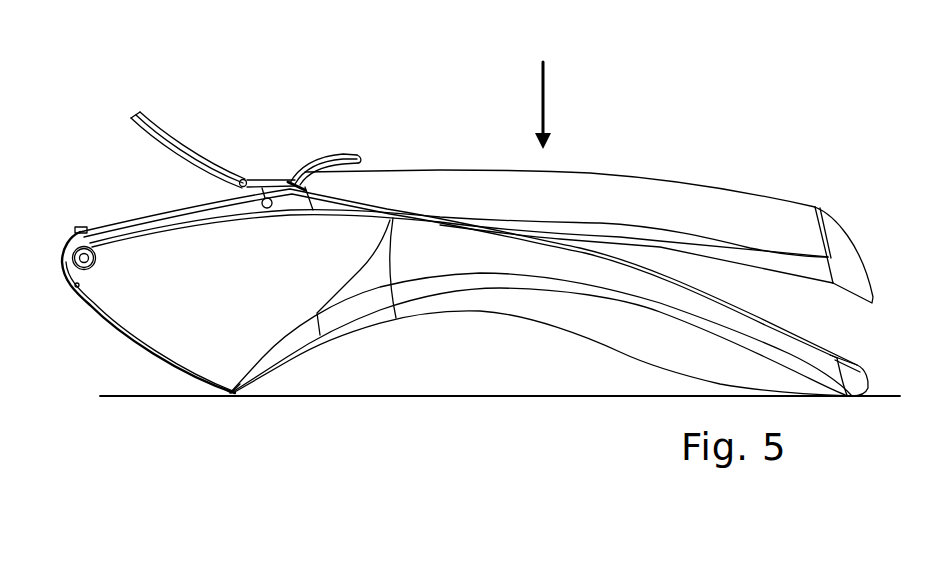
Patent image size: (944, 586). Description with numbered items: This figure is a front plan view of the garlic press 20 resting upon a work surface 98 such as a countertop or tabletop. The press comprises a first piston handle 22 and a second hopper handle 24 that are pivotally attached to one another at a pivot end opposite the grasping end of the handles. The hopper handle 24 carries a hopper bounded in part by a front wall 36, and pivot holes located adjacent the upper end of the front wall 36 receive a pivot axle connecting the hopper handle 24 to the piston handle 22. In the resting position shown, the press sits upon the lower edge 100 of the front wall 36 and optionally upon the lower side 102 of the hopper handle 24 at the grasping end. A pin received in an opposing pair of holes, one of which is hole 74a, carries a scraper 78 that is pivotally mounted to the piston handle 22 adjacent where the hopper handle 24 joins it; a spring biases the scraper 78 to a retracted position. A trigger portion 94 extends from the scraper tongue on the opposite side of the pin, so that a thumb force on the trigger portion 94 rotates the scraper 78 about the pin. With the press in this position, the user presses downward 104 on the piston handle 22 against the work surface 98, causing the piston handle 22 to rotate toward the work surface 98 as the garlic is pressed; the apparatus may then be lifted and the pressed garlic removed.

The garlic press 20 is at (460, 92).
The piston handle 22 is at (679, 190).
The hopper handle 24 is at (573, 327).
The front wall 36 is at (107, 318).
The hole 74a is at (267, 198).
The scraper 78 is at (137, 115).
The trigger portion 94 is at (345, 156).
The work surface 98 is at (121, 398).
The lower edge 100 is at (231, 392).
The lower side 102 is at (843, 393).
The downward press 104 is at (545, 88).